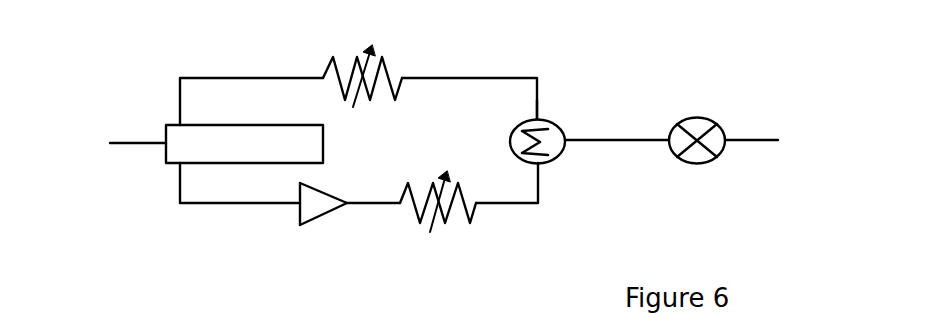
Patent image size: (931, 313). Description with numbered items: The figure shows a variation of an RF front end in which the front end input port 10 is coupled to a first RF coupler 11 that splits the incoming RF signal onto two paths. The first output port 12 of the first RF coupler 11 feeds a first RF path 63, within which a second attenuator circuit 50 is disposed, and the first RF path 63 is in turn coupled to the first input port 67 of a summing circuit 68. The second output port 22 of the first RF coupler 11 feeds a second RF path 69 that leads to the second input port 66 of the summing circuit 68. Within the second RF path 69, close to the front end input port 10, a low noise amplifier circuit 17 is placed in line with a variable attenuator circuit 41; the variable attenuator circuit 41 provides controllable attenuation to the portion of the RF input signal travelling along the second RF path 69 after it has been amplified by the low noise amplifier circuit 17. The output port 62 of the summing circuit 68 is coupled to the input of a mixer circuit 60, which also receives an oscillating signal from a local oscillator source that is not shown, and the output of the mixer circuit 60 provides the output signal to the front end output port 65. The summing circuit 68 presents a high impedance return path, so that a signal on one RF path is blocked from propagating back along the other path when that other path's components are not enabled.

The front end input port 10 is at (125, 145).
The first RF coupler 11 is at (167, 153).
The first output port 12 is at (180, 102).
The second output port 22 is at (187, 163).
The first RF path 63 is at (275, 78).
The second attenuator circuit 50 is at (378, 97).
The first input port 67 is at (540, 113).
The summing circuit 68 is at (553, 160).
The second input port 66 is at (536, 174).
The low noise amplifier circuit 17 is at (322, 222).
The second RF path 69 is at (362, 207).
The variable attenuator circuit 41 is at (455, 223).
The output port 62 is at (603, 140).
The mixer circuit 60 is at (712, 158).
The front end output port 65 is at (752, 140).